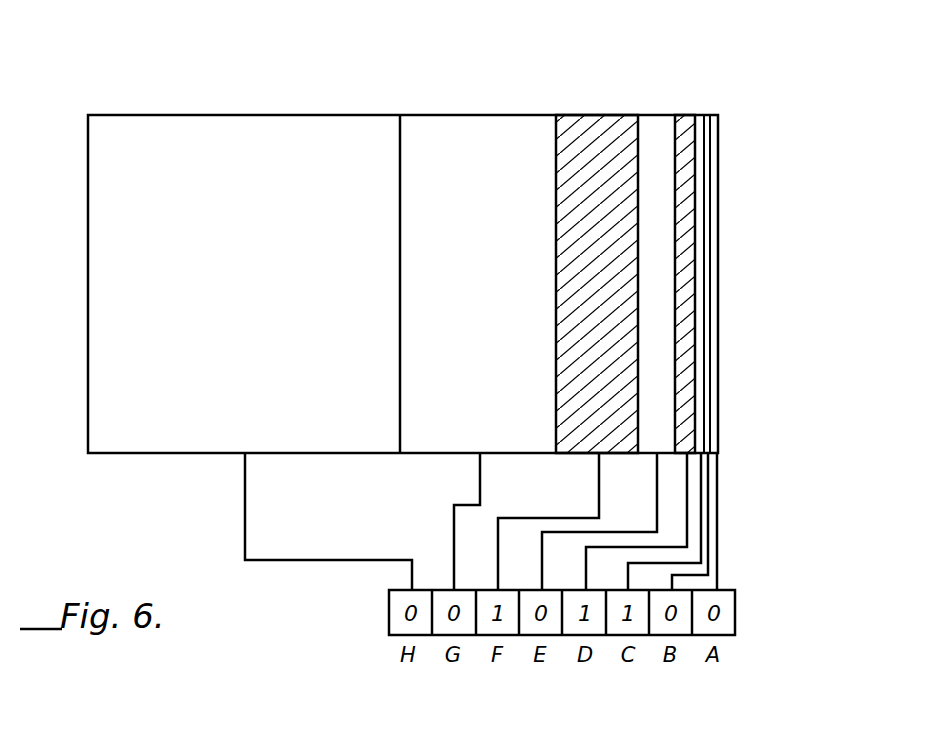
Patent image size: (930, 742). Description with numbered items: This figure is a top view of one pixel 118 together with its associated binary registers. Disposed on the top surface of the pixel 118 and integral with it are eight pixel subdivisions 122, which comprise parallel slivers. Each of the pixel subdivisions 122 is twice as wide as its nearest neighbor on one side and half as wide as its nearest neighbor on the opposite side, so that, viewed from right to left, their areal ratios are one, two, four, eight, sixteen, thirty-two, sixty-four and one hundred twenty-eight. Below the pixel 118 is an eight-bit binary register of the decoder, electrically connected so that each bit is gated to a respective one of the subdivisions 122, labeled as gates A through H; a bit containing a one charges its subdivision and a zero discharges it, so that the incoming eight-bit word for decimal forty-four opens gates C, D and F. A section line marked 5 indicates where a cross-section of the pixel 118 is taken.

The pixel 118 is at (730, 300).
The pixel subdivisions 122 is at (401, 118).
The section line 5 is at (599, 103).